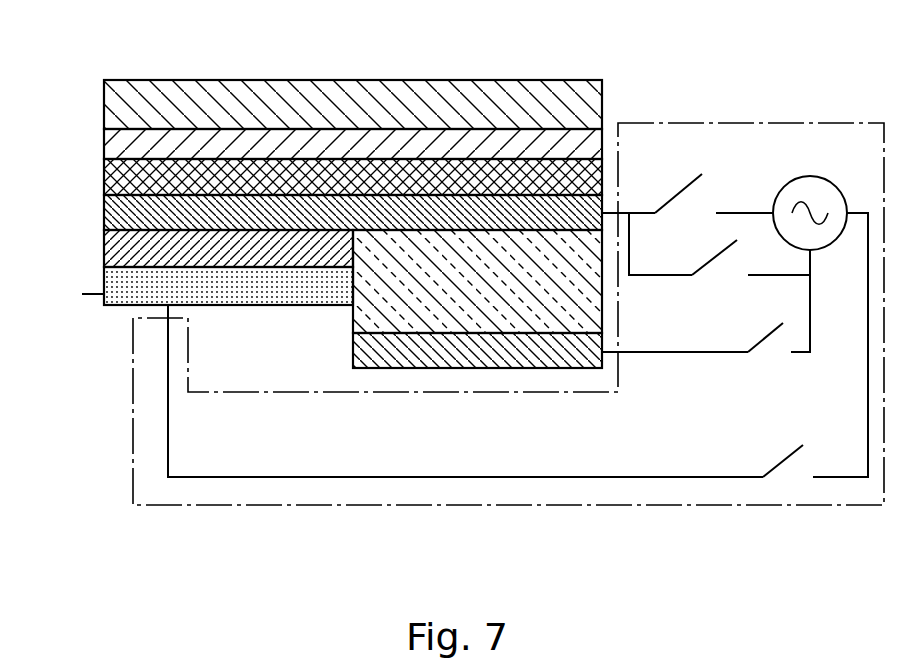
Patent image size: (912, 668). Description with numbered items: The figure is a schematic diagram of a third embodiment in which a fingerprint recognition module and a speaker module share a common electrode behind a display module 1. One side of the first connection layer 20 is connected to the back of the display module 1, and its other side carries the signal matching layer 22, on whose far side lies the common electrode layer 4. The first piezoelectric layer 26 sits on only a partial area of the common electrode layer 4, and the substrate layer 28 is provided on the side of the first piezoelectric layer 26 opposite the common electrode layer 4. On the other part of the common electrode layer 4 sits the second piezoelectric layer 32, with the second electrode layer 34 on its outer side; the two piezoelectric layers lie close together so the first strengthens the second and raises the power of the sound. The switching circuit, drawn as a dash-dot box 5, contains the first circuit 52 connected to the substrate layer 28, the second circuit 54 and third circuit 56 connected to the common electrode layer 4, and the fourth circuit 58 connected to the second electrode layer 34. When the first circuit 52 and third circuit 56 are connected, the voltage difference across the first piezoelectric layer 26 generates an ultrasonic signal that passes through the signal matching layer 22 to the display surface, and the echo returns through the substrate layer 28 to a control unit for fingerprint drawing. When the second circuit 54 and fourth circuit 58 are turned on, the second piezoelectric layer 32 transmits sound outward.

The display module 1 is at (104, 92).
The first connection layer 20 is at (104, 142).
The signal matching layer 22 is at (104, 177).
The common electrode layer 4 is at (104, 210).
The first piezoelectric layer 26 is at (104, 244).
The substrate layer 28 is at (104, 282).
The second piezoelectric layer 32 is at (353, 320).
The second electrode layer 34 is at (353, 350).
The driver circuit 5 is at (508, 258).
The second circuit 54 is at (738, 212).
The third circuit 56 is at (752, 275).
The fourth circuit 58 is at (735, 352).
The first circuit 52 is at (748, 477).